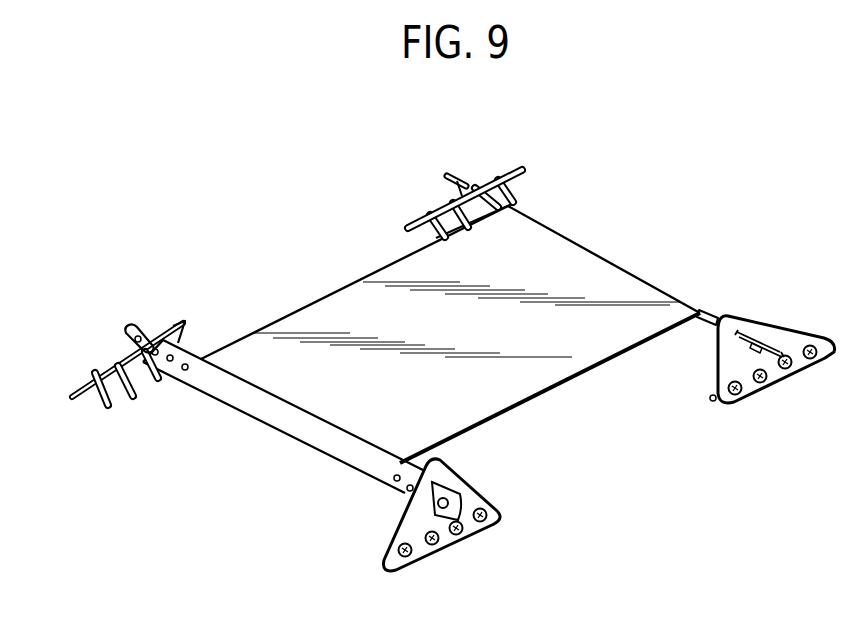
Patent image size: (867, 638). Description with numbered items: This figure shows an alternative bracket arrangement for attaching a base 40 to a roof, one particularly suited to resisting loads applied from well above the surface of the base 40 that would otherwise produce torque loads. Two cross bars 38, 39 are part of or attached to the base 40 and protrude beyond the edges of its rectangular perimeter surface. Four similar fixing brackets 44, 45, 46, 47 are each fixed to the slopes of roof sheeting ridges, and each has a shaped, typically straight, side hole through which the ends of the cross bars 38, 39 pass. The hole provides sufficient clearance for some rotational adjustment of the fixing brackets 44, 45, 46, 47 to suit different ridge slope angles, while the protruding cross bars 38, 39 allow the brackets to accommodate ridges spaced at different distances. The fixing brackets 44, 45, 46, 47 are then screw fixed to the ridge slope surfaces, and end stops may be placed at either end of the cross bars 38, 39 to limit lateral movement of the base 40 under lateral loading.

The cross bar 38 is at (250, 398).
The cross bar 39 is at (712, 316).
The base 40 is at (317, 321).
The fixing bracket 44 is at (727, 361).
The fixing bracket 45 is at (388, 528).
The fixing bracket 46 is at (495, 182).
The fixing bracket 47 is at (103, 372).